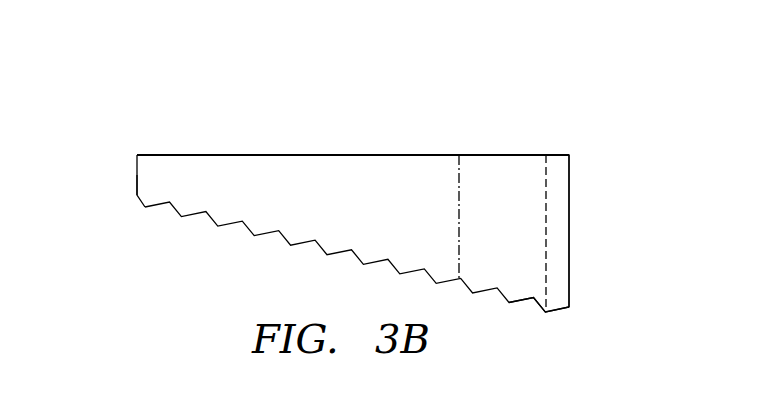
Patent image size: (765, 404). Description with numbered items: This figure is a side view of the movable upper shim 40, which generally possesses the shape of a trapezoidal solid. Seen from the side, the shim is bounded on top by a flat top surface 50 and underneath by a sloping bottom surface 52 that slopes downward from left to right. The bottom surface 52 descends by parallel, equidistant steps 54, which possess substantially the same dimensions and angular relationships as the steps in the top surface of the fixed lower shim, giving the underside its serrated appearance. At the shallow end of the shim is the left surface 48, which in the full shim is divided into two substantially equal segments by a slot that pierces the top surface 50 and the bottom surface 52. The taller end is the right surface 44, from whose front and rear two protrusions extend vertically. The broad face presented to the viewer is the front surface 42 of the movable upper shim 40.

The movable upper shim 40 is at (523, 140).
The front surface 42 is at (157, 172).
The right surface 44 is at (570, 217).
The left surface 48 is at (137, 183).
The top surface 50 is at (378, 155).
The sloping bottom surface 52 is at (515, 302).
The steps 54 is at (210, 218).